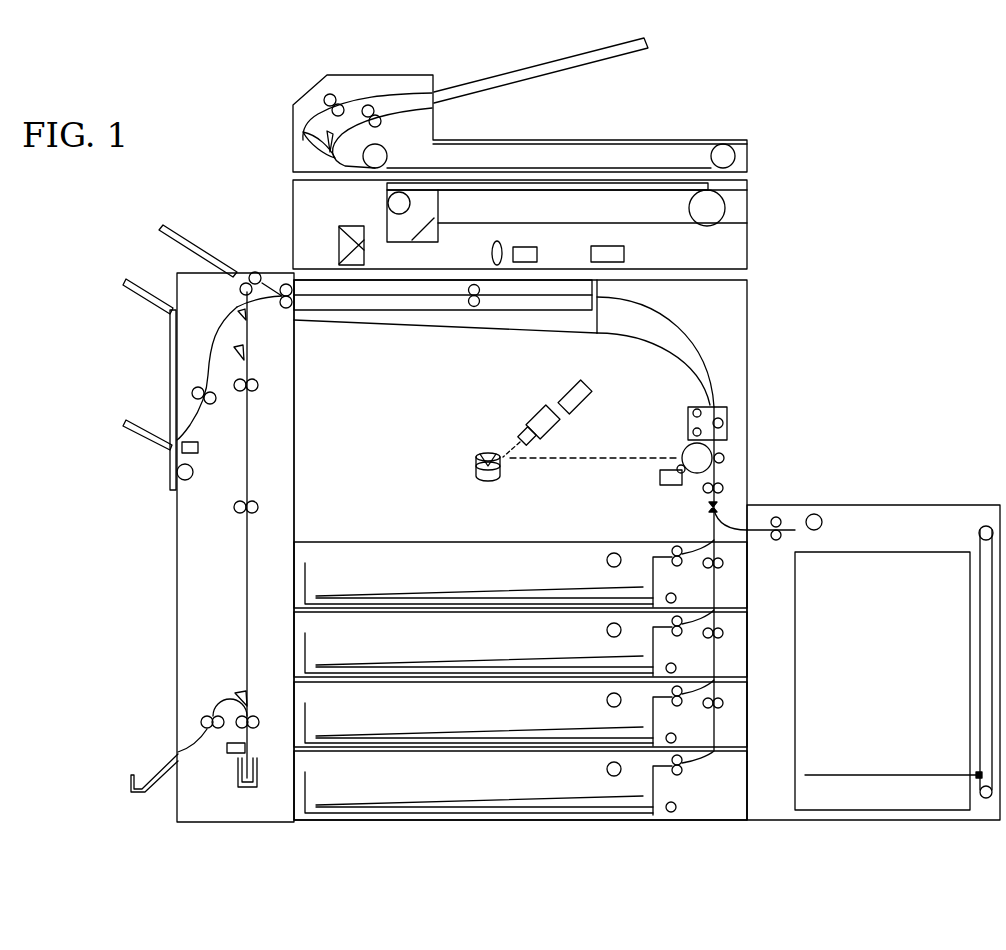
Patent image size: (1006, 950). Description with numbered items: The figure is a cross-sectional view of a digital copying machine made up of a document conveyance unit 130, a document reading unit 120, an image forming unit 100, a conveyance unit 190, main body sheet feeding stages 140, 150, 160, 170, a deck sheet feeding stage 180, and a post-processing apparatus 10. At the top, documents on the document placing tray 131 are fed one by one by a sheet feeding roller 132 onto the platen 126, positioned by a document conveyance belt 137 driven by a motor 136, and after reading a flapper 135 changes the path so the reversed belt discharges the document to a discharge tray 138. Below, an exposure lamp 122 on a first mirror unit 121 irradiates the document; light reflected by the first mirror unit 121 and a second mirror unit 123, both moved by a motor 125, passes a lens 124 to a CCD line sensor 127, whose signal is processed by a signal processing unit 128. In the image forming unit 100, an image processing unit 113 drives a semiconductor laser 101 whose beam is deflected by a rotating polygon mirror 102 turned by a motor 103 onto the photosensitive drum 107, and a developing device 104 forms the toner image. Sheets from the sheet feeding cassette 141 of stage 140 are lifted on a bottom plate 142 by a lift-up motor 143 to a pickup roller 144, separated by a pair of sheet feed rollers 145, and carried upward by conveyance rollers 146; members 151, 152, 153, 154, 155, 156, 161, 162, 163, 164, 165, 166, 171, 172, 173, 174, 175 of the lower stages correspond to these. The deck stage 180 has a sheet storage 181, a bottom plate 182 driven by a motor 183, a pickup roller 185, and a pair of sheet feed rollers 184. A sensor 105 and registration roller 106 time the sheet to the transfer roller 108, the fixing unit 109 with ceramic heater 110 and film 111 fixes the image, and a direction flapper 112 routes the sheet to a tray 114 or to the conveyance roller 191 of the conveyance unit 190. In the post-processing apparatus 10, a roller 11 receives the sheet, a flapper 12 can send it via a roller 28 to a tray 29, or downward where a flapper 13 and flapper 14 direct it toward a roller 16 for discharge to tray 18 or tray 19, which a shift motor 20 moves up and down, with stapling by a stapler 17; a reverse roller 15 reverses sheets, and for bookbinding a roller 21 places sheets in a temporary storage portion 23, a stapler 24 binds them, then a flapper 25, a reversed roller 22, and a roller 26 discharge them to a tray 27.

The post-processing apparatus 10 is at (175, 533).
The roller 11 is at (283, 285).
The flapper 12 is at (240, 291).
The flapper 13 is at (228, 314).
The flapper 14 is at (246, 356).
The reverse roller 15 is at (258, 385).
The roller 16 is at (216, 402).
The stapler 17 is at (200, 448).
The tray 18 is at (158, 292).
The tray 19 is at (146, 420).
The shift motor 20 is at (193, 478).
The roller 21 is at (258, 502).
The roller 22 is at (256, 716).
The temporary storage portion 23 is at (258, 782).
The stapler 24 is at (228, 756).
The flapper 25 is at (242, 694).
The roller 26 is at (206, 716).
The tray 27 is at (164, 772).
The roller 28 is at (253, 271).
The tray 29 is at (200, 238).
The image forming unit 100 is at (748, 347).
The semiconductor laser 101 is at (533, 422).
The rotating polygon mirror 102 is at (482, 454).
The motor 103 is at (478, 478).
The developing device 104 is at (658, 478).
The sensor 105 is at (708, 507).
The registration roller 106 is at (724, 488).
The photosensitive drum 107 is at (682, 452).
The transfer roller 108 is at (726, 456).
The fixing unit 109 is at (729, 409).
The ceramic heater 110 is at (692, 430).
The film 111 is at (694, 409).
The direction flapper 112 is at (700, 362).
The image processing unit 113 is at (562, 394).
The tray 114 is at (448, 328).
The document reading unit 120 is at (748, 221).
The first mirror unit 121 is at (426, 240).
The exposure lamp 122 is at (388, 204).
The second mirror unit 123 is at (341, 247).
The lens 124 is at (491, 254).
The motor 125 is at (707, 212).
The platen 126 is at (625, 183).
The CCD line sensor 127 is at (537, 252).
The signal processing unit 128 is at (624, 258).
The document conveyance unit 130 is at (748, 150).
The document placing tray 131 is at (528, 62).
The sheet feeding roller 132 is at (328, 93).
The flapper 135 is at (305, 134).
The motor 136 is at (722, 146).
The document conveyance belt 137 is at (588, 140).
The discharge tray 138 is at (480, 140).
The main body sheet feeding stage 140 is at (537, 563).
The sheet feeding cassette 141 is at (310, 588).
The bottom plate 142 is at (428, 594).
The lift-up motor 143 is at (676, 597).
The pickup roller 144 is at (606, 560).
The pair of sheet feed rollers 145 is at (673, 546).
The conveyance rollers 146 is at (724, 563).
The main body sheet feeding stage 150 is at (537, 643).
The sheet feeding cassette 151 is at (310, 656).
The bottom plate 152 is at (428, 662).
The lift-up motor 153 is at (676, 668).
The pickup roller 154 is at (606, 630).
The pair of sheet feed rollers 155 is at (660, 628).
The conveyance rollers 156 is at (724, 633).
The main body sheet feeding stage 160 is at (537, 713).
The sheet feeding cassette 161 is at (310, 725).
The bottom plate 162 is at (428, 731).
The lift-up motor 163 is at (676, 738).
The pickup roller 164 is at (606, 700).
The pair of sheet feed rollers 165 is at (660, 698).
The conveyance rollers 166 is at (724, 703).
The main body sheet feeding stage 170 is at (520, 785).
The sheet feeding cassette 171 is at (310, 797).
The bottom plate 172 is at (428, 802).
The lift-up motor 173 is at (677, 807).
The pickup roller 174 is at (606, 769).
The pair of sheet feed rollers 175 is at (684, 766).
The deck sheet feeding stage 180 is at (906, 505).
The sheet storage 181 is at (798, 610).
The bottom plate 182 is at (838, 772).
The motor 183 is at (978, 533).
The pair of sheet feed rollers 184 is at (777, 515).
The pickup roller 185 is at (822, 524).
The conveyance unit 190 is at (570, 312).
The conveyance roller 191 is at (474, 308).